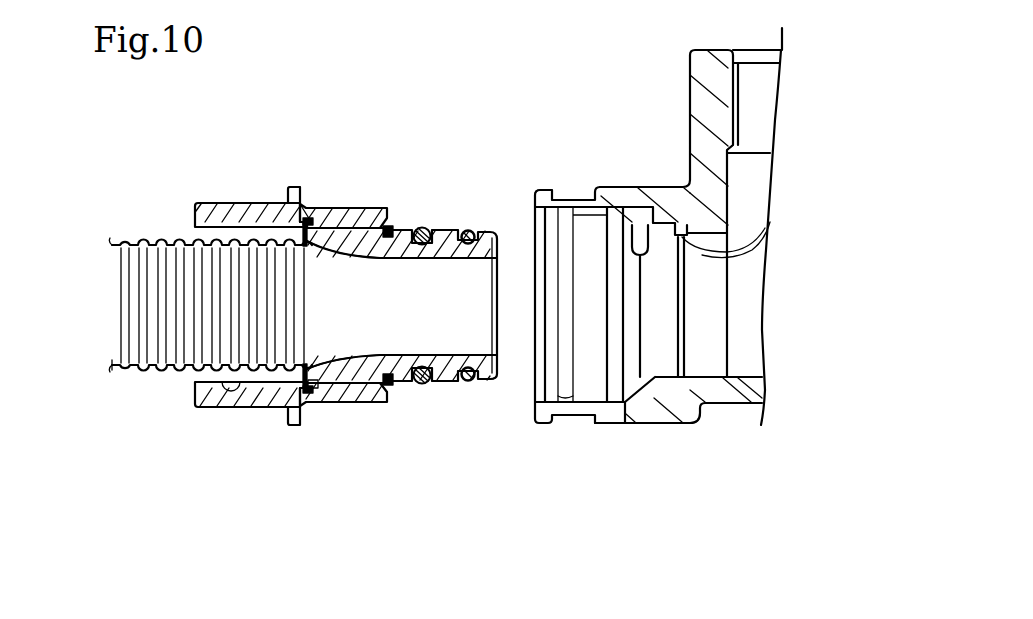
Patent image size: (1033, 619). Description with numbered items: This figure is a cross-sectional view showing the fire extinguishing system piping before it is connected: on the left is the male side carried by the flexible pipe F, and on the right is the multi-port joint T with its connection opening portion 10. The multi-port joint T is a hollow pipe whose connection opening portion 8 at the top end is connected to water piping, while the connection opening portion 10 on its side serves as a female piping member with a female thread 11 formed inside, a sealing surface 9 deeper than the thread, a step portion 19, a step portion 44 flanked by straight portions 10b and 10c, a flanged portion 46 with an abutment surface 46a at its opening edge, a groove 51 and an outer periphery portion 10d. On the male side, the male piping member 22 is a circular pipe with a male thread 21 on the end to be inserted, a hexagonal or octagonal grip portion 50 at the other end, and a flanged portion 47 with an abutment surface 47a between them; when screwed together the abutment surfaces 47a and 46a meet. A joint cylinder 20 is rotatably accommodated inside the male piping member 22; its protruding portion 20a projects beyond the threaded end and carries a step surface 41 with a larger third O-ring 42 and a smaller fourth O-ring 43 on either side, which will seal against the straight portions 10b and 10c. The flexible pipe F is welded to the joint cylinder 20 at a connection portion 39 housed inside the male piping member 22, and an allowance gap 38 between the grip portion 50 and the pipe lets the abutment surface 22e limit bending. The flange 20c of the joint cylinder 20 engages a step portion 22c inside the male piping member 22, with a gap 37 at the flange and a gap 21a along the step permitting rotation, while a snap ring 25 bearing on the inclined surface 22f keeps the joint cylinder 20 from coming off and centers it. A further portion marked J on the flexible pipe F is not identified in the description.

The flexible pipe F is at (135, 236).
The joint portion J is at (128, 376).
The male piping member 22 is at (192, 212).
The grip portion 50 is at (214, 203).
The allowance gap 38 is at (205, 379).
The abutment surface 22e is at (228, 386).
The connection portion 39 is at (294, 384).
The gap 37 is at (310, 396).
The flanged portion 47 is at (296, 187).
The abutment surface 47a is at (312, 203).
The flange 20c is at (290, 203).
The male thread 21 is at (346, 405).
The gap 21a is at (362, 407).
The joint cylinder 20 is at (364, 240).
The step portion 22c is at (330, 252).
The inclined surface 22f is at (366, 385).
The protruding portion 20a is at (480, 396).
The snap ring 25 is at (386, 225).
The third O-ring 42 is at (419, 226).
The step surface 41 is at (458, 228).
The fourth O-ring 43 is at (472, 230).
The flanged portion 46 is at (546, 207).
The abutment surface 46a is at (536, 190).
The groove 51 is at (578, 207).
The female thread 11 is at (588, 398).
The connection opening portion 10 is at (634, 424).
The straight portion 10c is at (647, 225).
The outer periphery portion 10d is at (606, 424).
The straight portion 10b is at (752, 236).
The step portion 44 is at (722, 248).
The step portion 19 is at (695, 272).
The sealing surface 9 is at (703, 378).
The connection opening portion 8 is at (768, 75).
The multi-port joint T is at (690, 100).